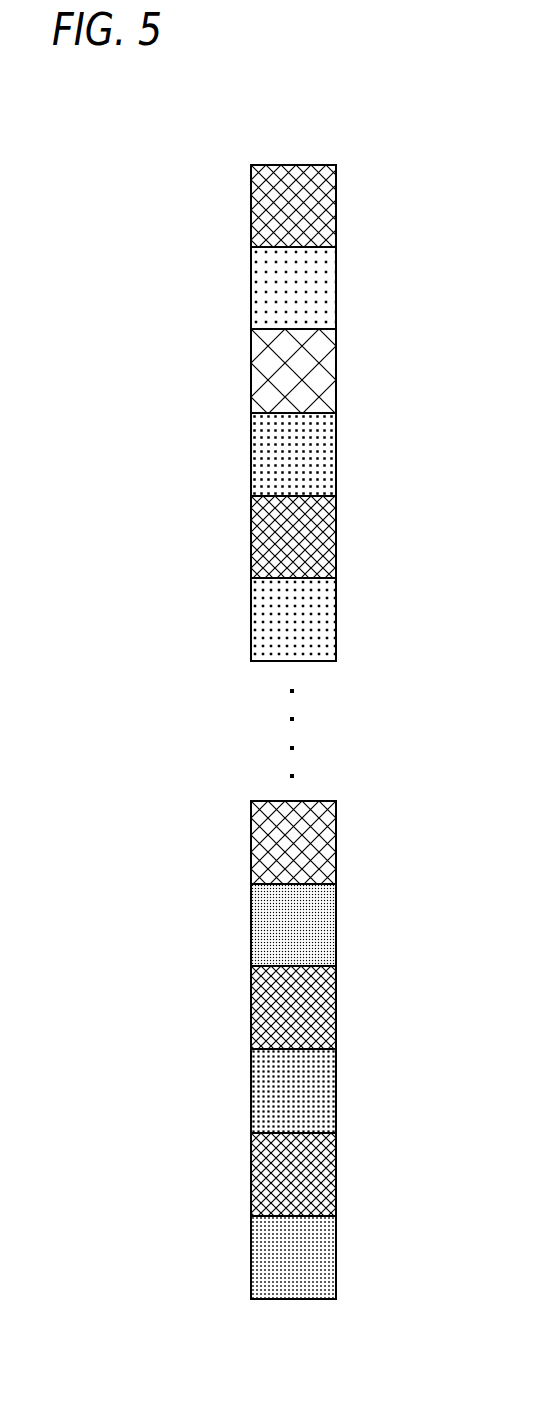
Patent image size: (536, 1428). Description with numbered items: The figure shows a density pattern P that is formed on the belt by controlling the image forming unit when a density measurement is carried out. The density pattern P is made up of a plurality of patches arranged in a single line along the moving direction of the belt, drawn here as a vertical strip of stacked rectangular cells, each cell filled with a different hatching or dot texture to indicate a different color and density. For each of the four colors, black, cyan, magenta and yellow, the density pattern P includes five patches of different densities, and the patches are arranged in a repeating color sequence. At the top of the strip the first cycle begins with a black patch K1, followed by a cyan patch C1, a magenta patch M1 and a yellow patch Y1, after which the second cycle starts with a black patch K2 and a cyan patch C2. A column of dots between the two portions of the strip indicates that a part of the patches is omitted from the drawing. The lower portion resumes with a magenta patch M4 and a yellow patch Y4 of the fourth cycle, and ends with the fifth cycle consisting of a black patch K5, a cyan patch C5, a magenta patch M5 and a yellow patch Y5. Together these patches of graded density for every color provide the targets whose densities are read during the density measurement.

The black patch K1 is at (336, 213).
The cyan patch C1 is at (336, 295).
The magenta patch M1 is at (336, 377).
The yellow patch Y1 is at (336, 461).
The black patch K2 is at (336, 544).
The cyan patch C2 is at (336, 626).
The magenta patch M4 is at (336, 849).
The yellow patch Y4 is at (336, 932).
The black patch K5 is at (336, 1014).
The cyan patch C5 is at (336, 1097).
The magenta patch M5 is at (336, 1181).
The yellow patch Y5 is at (336, 1264).
The density pattern P is at (373, 122).